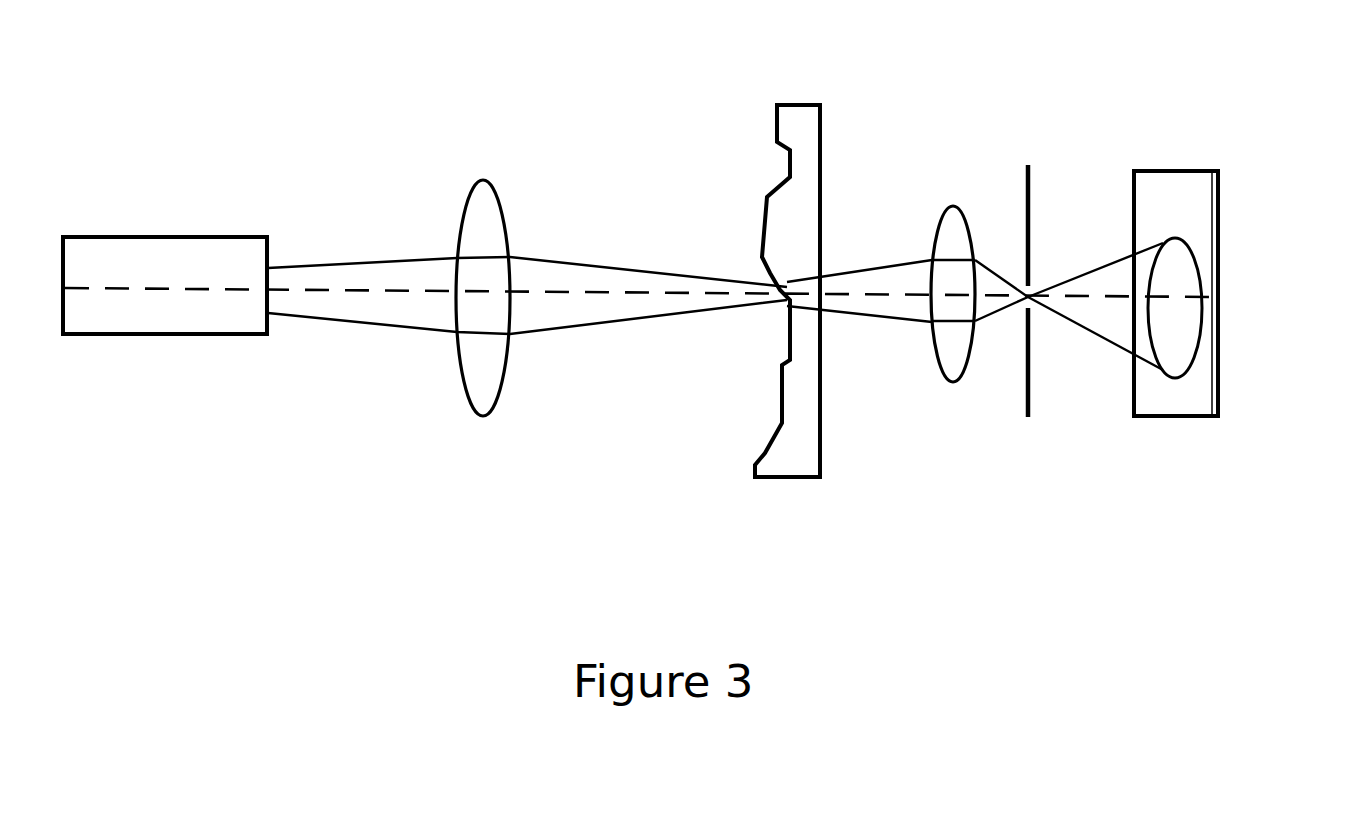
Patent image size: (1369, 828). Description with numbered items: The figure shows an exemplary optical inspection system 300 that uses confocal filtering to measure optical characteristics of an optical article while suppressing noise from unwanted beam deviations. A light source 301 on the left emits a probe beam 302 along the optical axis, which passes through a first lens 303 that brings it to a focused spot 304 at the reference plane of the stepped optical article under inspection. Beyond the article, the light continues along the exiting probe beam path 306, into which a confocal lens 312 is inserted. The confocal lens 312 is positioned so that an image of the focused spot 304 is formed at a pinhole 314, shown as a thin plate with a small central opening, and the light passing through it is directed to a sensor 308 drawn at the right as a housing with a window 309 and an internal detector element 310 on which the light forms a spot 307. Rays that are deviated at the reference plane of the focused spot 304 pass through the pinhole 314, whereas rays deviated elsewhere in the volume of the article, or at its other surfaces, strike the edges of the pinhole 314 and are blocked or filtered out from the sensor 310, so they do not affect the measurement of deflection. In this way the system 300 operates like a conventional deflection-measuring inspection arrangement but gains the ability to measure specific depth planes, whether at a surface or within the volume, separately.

The optical inspection system 300 is at (487, 545).
The light source 301 is at (101, 320).
The light beam 302 is at (352, 277).
The focusing lens 303 is at (462, 368).
The focused spot 304 is at (776, 305).
The exiting probe beam path 306 is at (877, 265).
The detection spot 307 is at (1197, 262).
The sensor 308 is at (1167, 172).
The detector window 309 is at (1202, 198).
The sensor 310 is at (1198, 388).
The confocal lens 312 is at (935, 383).
The pinhole 314 is at (1036, 312).